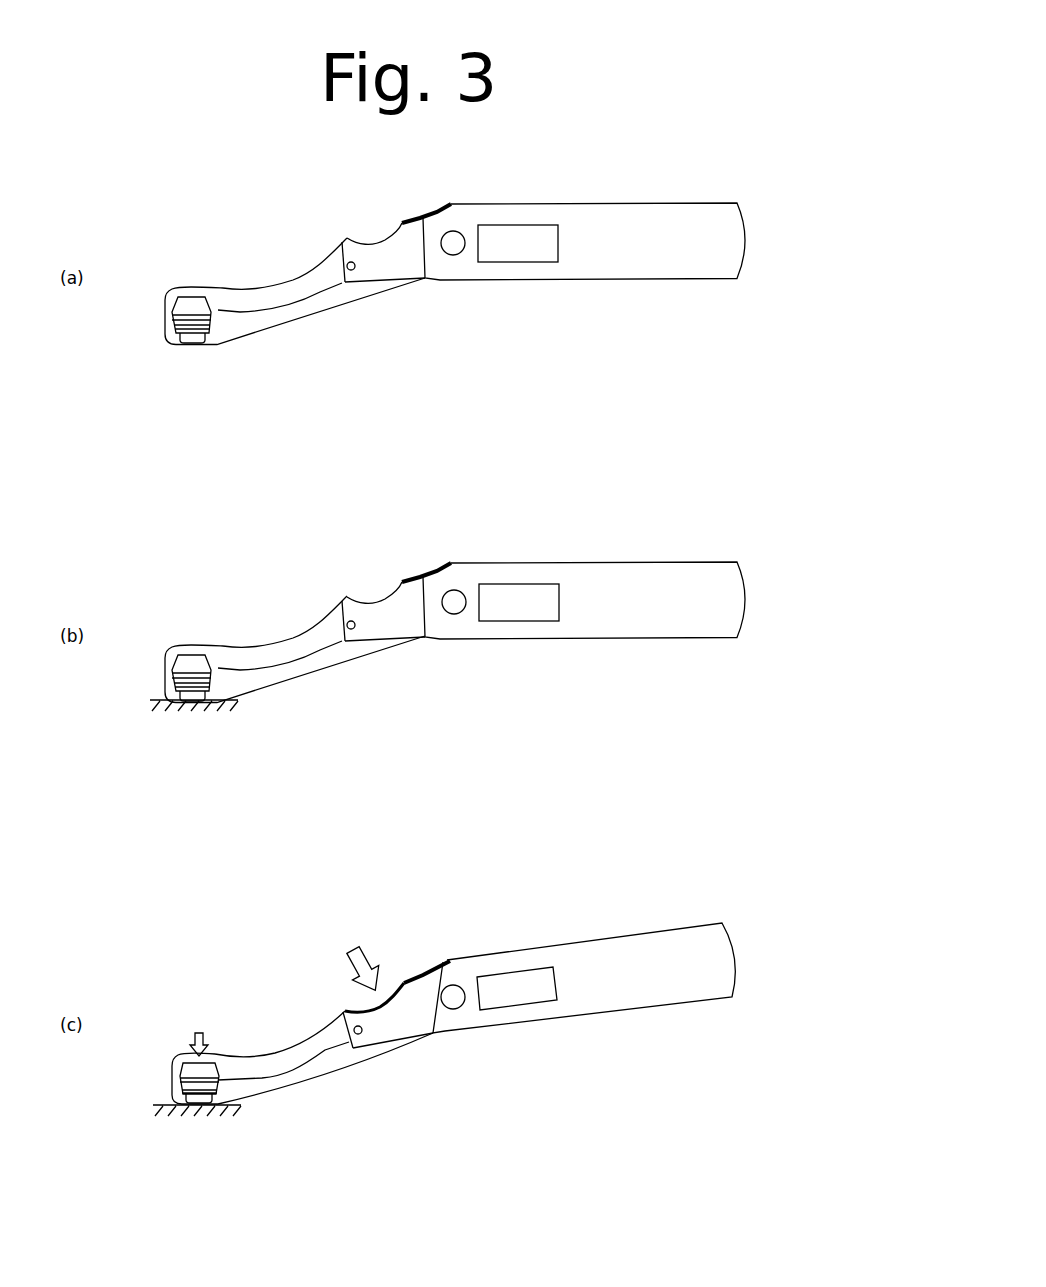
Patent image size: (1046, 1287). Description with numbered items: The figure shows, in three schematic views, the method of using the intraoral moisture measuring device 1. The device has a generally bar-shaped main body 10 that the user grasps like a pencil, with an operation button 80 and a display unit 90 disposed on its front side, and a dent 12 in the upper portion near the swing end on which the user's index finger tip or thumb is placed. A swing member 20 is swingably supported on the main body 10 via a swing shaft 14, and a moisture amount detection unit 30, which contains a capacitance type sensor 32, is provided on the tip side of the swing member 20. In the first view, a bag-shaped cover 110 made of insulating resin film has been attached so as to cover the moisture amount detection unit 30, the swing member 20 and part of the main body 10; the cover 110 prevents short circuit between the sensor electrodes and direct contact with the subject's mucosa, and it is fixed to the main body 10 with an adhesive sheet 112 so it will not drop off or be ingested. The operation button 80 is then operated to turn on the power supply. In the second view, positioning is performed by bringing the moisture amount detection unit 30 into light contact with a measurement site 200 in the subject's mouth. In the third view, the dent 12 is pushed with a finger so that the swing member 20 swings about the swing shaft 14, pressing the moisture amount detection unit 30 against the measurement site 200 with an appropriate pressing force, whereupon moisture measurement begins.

The intraoral moisture measuring device 1 is at (707, 180).
The main body 10 is at (618, 225).
The dent 12 is at (378, 235).
The swing shaft 14 is at (348, 262).
The swing member 20 is at (272, 300).
The moisture amount detection unit 30 is at (186, 346).
The capacitance type sensor 32 is at (195, 345).
The operation button 80 is at (454, 240).
The display unit 90 is at (517, 237).
The cover 110 is at (226, 288).
The adhesive sheet 112 is at (426, 212).
The measurement site 200 is at (183, 682).